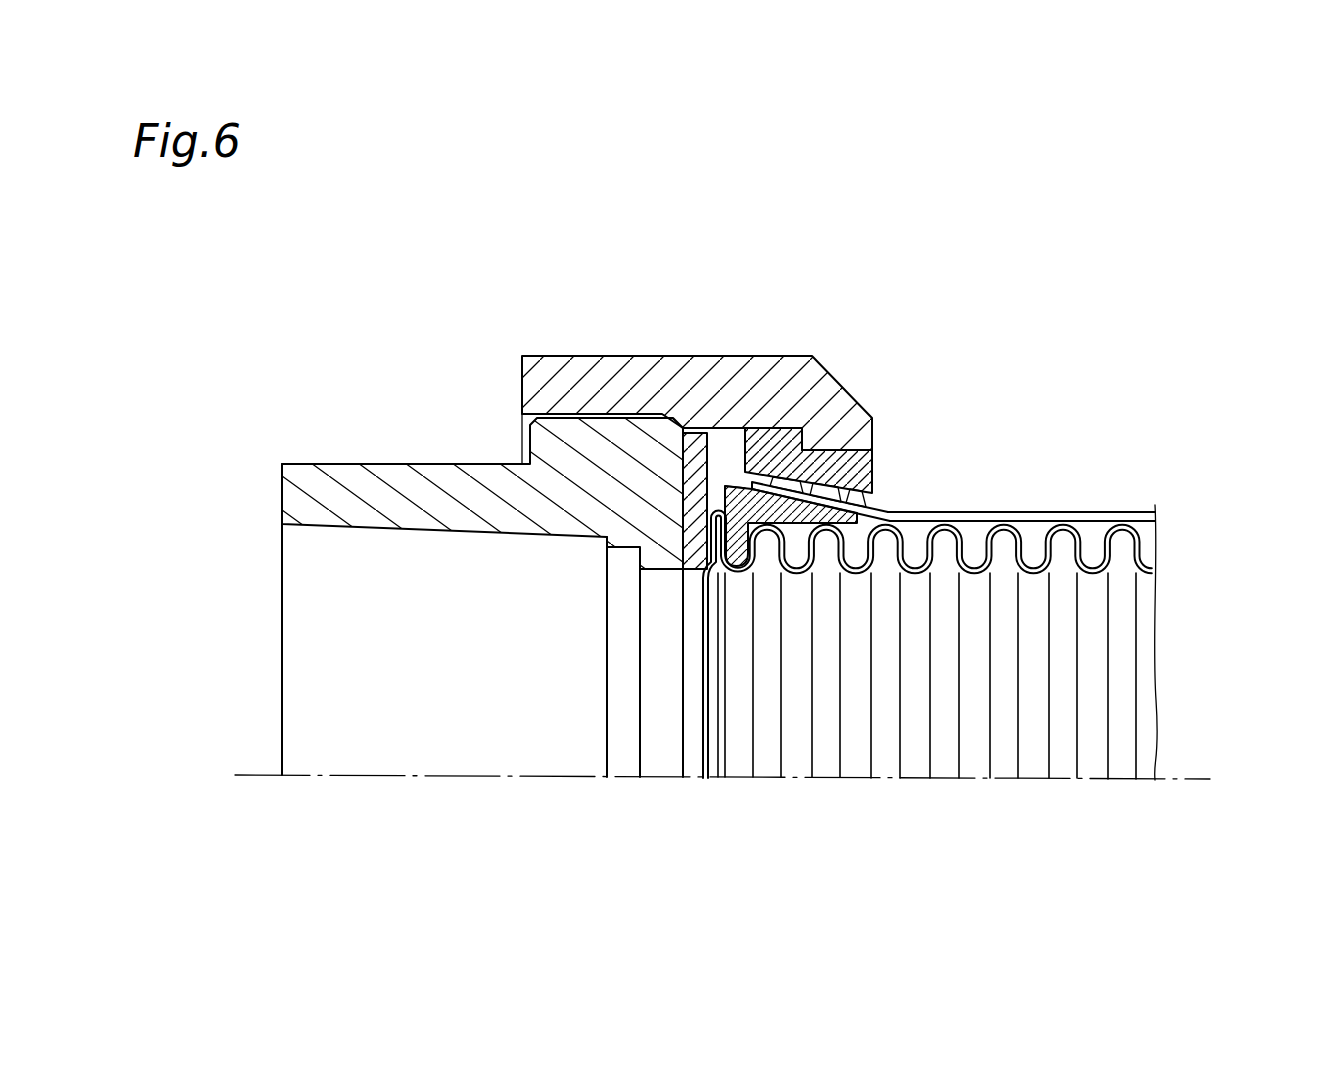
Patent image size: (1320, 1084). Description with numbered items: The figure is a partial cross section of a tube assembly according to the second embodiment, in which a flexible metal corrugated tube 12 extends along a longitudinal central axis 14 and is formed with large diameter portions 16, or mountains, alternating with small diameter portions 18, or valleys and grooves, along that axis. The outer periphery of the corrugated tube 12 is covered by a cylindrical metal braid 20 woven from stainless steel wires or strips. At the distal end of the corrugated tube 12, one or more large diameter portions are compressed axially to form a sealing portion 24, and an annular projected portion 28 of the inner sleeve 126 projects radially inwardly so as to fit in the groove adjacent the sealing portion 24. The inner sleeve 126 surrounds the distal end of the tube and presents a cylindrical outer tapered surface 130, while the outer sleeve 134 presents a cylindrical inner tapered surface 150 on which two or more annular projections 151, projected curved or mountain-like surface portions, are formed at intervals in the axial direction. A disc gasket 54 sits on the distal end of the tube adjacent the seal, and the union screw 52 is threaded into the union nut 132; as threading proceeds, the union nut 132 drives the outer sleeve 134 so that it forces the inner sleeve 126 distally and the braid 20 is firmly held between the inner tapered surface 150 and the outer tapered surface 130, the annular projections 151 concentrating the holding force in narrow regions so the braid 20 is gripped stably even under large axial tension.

The corrugated tube 12 is at (1007, 775).
The longitudinal central axis 14 is at (507, 777).
The large diameter portions 16 is at (1122, 535).
The small diameter portions 18 is at (1093, 572).
The metal braid 20 is at (1127, 512).
The sealing portion 24 is at (693, 553).
The annular projected portion 28 is at (739, 548).
The union screw 52 is at (343, 460).
The disc gasket 54 is at (693, 565).
The inner sleeve 126 is at (797, 525).
The cylindrical outer tapered surface 130 is at (737, 485).
The union nut 132 is at (580, 356).
The outer sleeve 134 is at (875, 465).
The cylindrical inner tapered surface 150 is at (752, 482).
The annular projections 151 is at (847, 488).